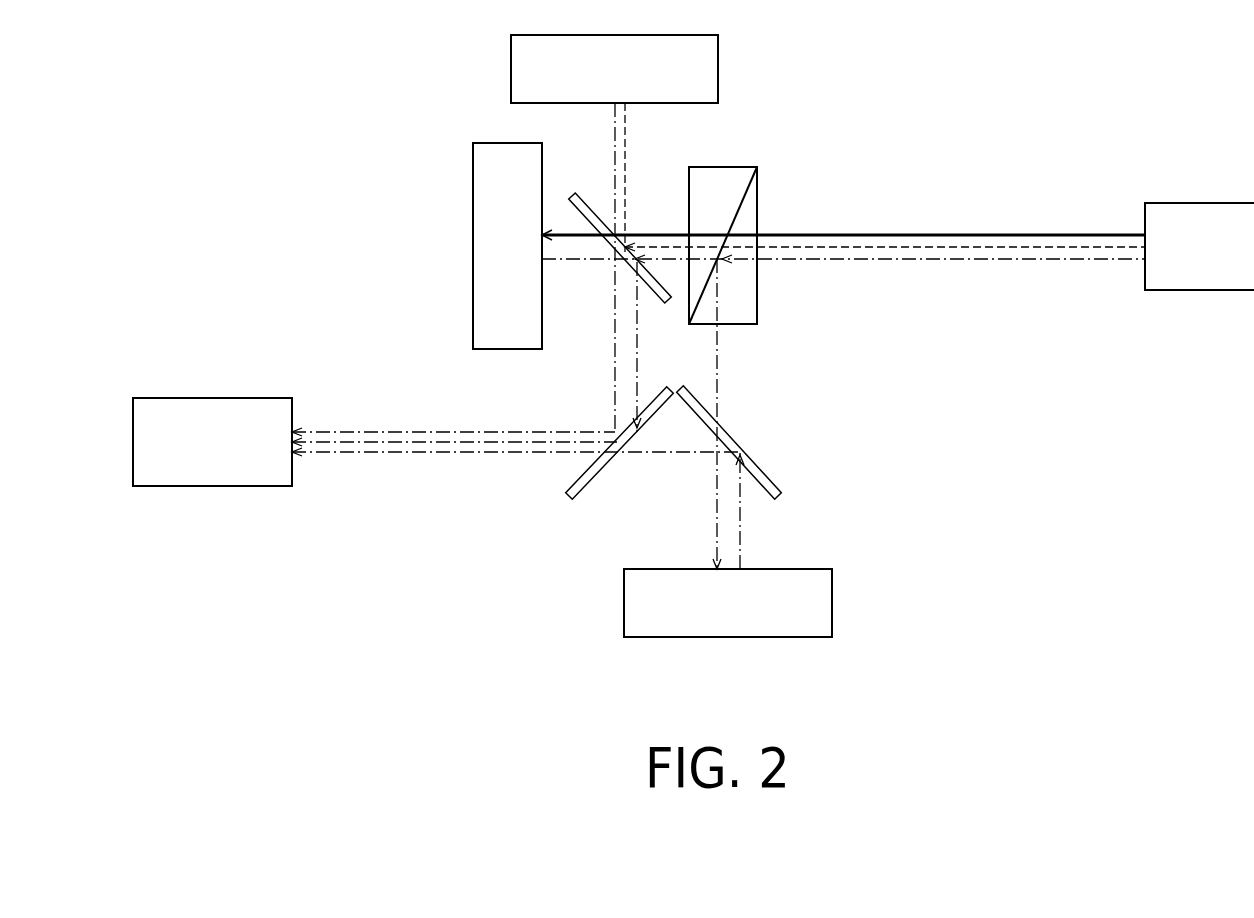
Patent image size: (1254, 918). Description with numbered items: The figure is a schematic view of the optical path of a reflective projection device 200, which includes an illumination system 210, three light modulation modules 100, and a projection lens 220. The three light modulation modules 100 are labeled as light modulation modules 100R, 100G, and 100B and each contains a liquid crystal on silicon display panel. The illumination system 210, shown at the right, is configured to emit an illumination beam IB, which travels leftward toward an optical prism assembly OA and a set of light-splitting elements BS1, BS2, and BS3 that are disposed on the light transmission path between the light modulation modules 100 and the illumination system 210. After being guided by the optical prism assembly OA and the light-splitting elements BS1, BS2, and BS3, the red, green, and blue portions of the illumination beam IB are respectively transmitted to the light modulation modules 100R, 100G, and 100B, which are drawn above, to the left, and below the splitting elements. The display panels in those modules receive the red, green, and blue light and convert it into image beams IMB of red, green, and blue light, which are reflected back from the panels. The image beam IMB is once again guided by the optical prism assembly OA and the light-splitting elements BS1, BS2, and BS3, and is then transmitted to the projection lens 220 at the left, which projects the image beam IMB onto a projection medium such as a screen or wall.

The reflective projection device 200 is at (1241, 692).
The light modulation module 100 is at (573, 336).
The light modulation module 100R is at (511, 68).
The light modulation module 100G is at (473, 203).
The light modulation module 100B is at (624, 601).
The optical prism assembly OA is at (717, 176).
The illumination system 210 is at (1246, 262).
The projection lens 220 is at (234, 457).
The light-splitting element BS1 is at (577, 193).
The light-splitting element BS2 is at (778, 500).
The light-splitting element BS3 is at (566, 499).
The illumination beam IB is at (1048, 236).
The image beam IMB is at (388, 454).